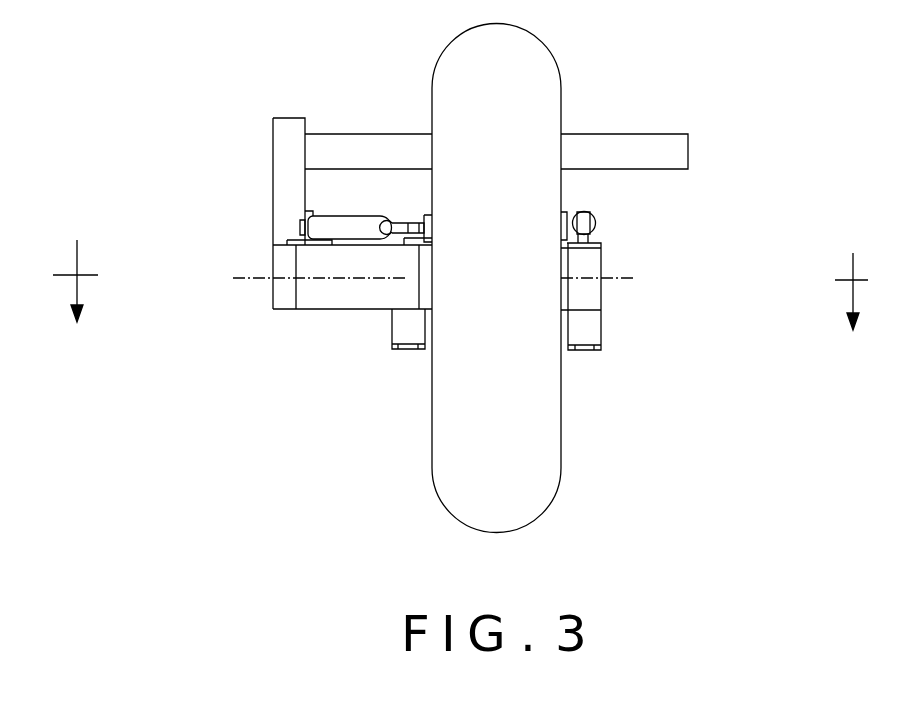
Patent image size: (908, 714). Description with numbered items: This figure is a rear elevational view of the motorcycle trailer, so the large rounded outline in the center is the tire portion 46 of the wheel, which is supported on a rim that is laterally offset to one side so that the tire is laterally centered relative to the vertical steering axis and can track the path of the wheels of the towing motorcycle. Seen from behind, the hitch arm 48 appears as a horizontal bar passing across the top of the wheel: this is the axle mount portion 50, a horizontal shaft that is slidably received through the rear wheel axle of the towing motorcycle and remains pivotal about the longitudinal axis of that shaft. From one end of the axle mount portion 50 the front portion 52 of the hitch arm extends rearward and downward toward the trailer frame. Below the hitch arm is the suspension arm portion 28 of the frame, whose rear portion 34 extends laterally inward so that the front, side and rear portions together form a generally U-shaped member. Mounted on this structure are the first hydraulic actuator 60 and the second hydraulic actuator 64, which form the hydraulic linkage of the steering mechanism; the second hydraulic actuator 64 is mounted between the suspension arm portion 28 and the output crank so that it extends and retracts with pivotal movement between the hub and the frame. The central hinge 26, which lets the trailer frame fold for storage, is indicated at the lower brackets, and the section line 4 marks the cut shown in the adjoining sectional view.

The section line 4- 4 is at (455, 259).
The central hinge 26 is at (409, 352).
The suspension arm portion 28 is at (240, 286).
The rear portion 34 is at (362, 302).
The tire portion 46 is at (545, 485).
The hitch arm 48 is at (250, 167).
The axle mount portion 50 is at (665, 145).
The front portion 52 is at (283, 188).
The first hydraulic actuator 60 is at (597, 215).
The second hydraulic actuator 64 is at (346, 232).